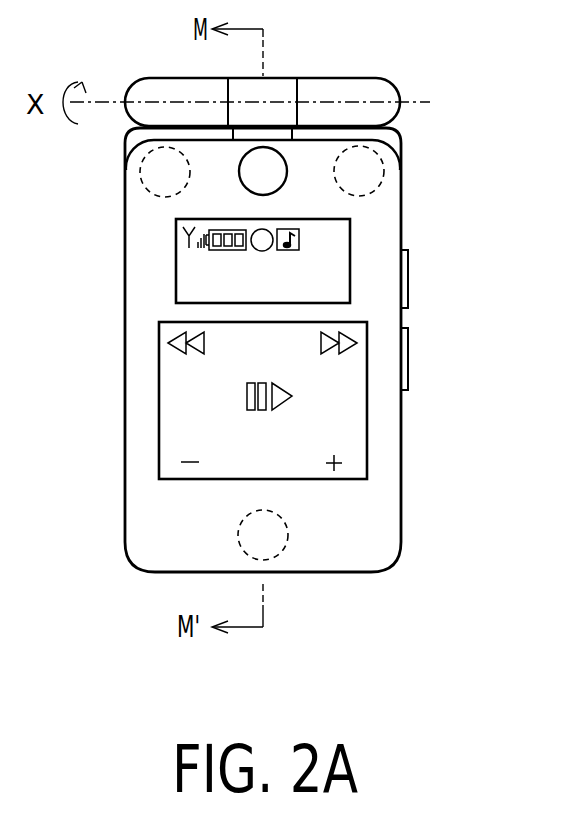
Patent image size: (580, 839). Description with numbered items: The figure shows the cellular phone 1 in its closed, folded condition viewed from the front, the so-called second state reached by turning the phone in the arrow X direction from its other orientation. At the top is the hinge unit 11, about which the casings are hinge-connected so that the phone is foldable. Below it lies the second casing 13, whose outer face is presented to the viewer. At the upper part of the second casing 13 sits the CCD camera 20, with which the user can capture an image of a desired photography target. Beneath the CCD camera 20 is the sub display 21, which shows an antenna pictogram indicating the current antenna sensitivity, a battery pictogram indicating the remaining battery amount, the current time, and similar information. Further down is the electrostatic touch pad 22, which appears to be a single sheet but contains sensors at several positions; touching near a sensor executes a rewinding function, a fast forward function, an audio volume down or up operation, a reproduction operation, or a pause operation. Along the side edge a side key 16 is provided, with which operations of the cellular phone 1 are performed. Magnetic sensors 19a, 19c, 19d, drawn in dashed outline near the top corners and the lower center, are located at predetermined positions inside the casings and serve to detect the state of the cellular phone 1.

The cellular phone 1 is at (428, 465).
The hinge unit 11 is at (398, 87).
The second casing 13 is at (125, 293).
The side key 16 is at (408, 279).
The magnetic sensor 19a is at (238, 535).
The magnetic sensor 19c is at (386, 180).
The magnetic sensor 19d is at (141, 172).
The CCD camera 20 is at (280, 148).
The sub display 21 is at (176, 260).
The electrostatic touch pad 22 is at (159, 398).